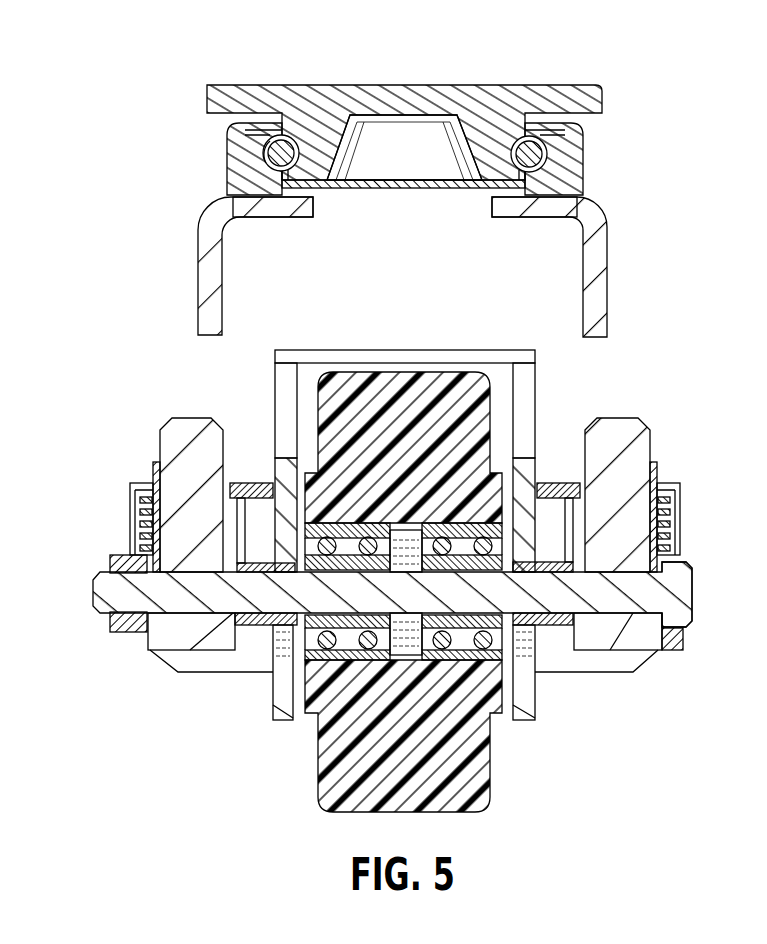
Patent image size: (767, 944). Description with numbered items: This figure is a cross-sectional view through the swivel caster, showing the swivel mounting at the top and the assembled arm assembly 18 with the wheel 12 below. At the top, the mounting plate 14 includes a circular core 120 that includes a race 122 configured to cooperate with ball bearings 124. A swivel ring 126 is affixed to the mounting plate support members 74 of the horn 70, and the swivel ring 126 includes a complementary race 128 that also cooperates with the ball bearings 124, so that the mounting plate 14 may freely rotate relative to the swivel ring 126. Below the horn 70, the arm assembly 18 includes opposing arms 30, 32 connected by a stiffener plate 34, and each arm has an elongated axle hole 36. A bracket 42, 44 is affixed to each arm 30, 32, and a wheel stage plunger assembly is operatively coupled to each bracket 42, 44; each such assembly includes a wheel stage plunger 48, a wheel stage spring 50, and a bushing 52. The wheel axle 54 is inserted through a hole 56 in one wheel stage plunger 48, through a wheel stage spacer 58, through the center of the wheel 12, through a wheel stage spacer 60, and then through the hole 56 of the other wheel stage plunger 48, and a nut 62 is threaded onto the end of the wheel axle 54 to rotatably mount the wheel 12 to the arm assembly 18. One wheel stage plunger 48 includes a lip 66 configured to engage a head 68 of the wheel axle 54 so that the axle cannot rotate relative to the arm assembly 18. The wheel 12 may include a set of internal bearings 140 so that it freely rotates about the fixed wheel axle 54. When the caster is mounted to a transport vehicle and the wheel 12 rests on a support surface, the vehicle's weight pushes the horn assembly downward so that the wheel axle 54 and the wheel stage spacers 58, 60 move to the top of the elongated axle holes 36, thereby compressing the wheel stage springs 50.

The wheel 12 is at (431, 385).
The mounting plate 14 is at (530, 85).
The arm assembly 18 is at (415, 559).
The arm 30 is at (281, 392).
The arm 32 is at (530, 392).
The stiffener plate 34 is at (383, 352).
The elongated axle hole 36 is at (536, 648).
The bracket 42 is at (251, 487).
The bracket 44 is at (556, 487).
The wheel stage plunger 48 is at (194, 432).
The wheel stage spring 50 is at (150, 520).
The bushing 52 is at (156, 476).
The wheel axle 54 is at (694, 575).
The hole 56 is at (186, 604).
The wheel stage spacer 58 is at (560, 626).
The wheel stage spacer 60 is at (256, 626).
The nut 62 is at (121, 632).
The lip 66 is at (676, 642).
The head 68 is at (684, 600).
The horn 70 is at (604, 239).
The mounting plate support members 74 is at (266, 212).
The circular core 120 is at (465, 152).
The race 122 is at (291, 146).
The ball bearings 124 is at (266, 162).
The swivel ring 126 is at (582, 167).
The complementary race 128 is at (273, 142).
The internal bearings 140 is at (343, 655).